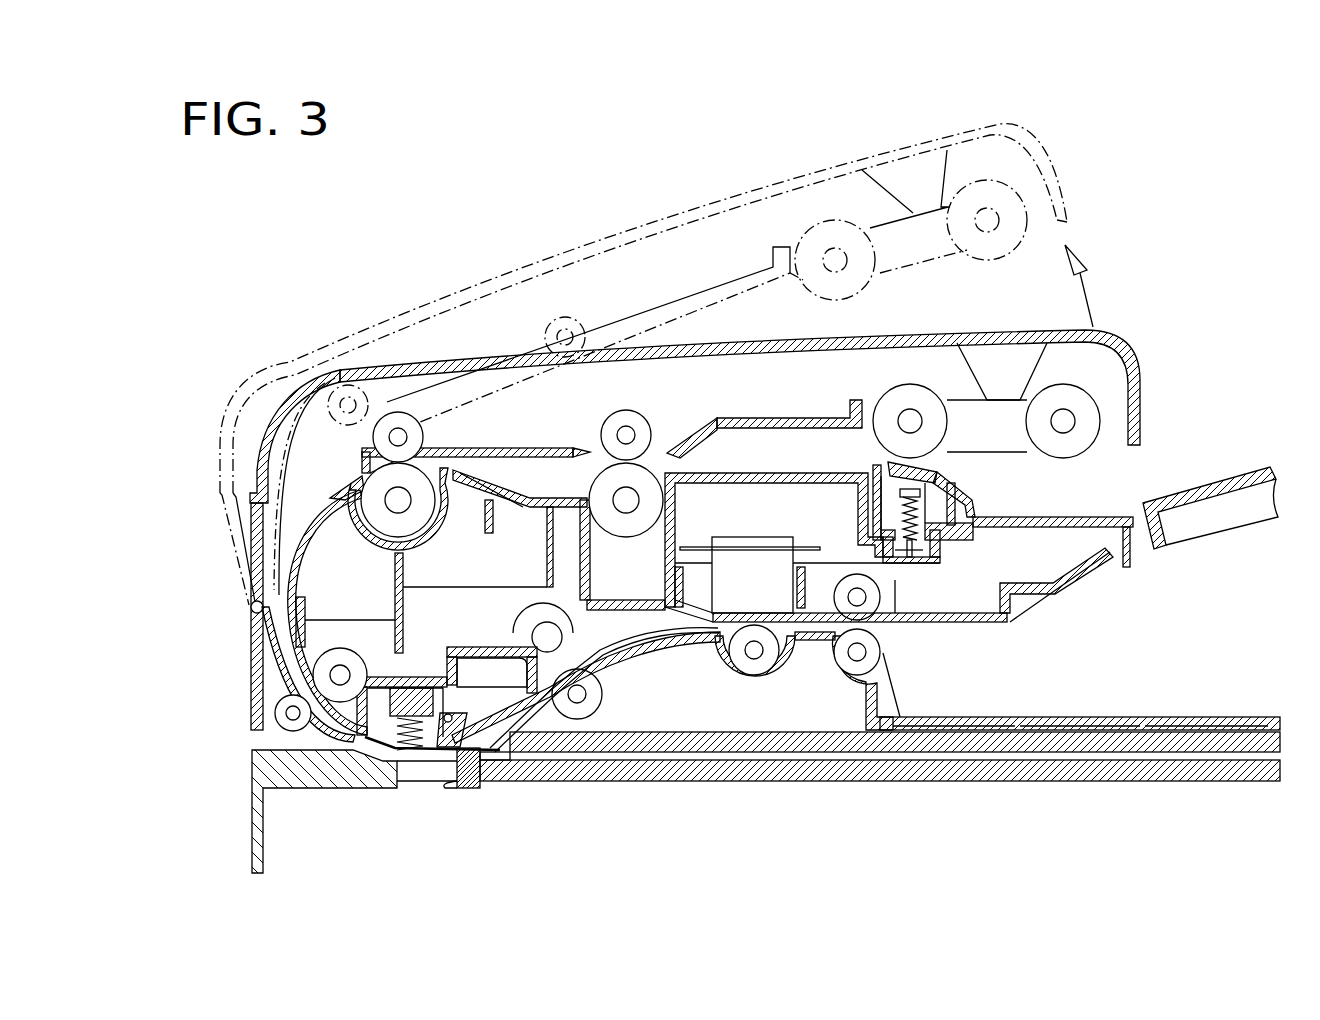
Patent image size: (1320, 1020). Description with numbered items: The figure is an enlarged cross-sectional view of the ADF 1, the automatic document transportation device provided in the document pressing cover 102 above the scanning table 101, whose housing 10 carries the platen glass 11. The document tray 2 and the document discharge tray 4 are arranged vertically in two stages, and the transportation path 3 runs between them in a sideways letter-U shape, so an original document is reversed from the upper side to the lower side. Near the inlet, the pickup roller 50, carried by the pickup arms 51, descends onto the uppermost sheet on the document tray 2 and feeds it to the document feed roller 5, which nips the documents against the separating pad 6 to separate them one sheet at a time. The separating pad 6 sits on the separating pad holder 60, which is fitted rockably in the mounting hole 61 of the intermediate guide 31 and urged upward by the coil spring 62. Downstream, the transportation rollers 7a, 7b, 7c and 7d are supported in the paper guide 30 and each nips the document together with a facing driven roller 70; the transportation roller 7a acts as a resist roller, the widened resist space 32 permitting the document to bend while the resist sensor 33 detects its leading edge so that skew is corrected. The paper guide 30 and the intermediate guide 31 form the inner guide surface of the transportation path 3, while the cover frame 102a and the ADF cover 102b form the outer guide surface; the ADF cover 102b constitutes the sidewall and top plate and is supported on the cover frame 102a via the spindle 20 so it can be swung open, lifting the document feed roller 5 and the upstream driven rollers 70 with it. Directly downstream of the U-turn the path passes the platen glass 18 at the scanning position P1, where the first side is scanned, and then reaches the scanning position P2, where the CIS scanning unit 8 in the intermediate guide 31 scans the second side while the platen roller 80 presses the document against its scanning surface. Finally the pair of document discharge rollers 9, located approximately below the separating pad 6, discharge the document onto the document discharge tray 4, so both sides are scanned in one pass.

The ADF 1 is at (1178, 432).
The document tray 2 is at (1240, 470).
The transportation path 3 is at (836, 493).
The document discharge tray 4 is at (1205, 716).
The document feed roller 5 is at (896, 393).
The separating pad 6 is at (975, 428).
The transportation roller 7a is at (606, 433).
The transportation roller 7b is at (410, 447).
The transportation roller 7c is at (337, 648).
The transportation roller 7d is at (512, 633).
The CIS scanning unit 8 is at (762, 548).
The document discharge rollers 9 is at (876, 664).
The housing 10 is at (305, 790).
The platen glass 11 is at (600, 783).
The platen glass 18 is at (462, 790).
The spindle 20 is at (250, 607).
The paper guide 30 is at (320, 492).
The intermediate guide 31 is at (1063, 517).
The resist space 32 is at (757, 464).
The resist sensor 33 is at (672, 430).
The pickup roller 50 is at (1063, 393).
The pickup arms 51 is at (966, 398).
The separating pad holder 60 is at (878, 467).
The mounting hole 61 is at (978, 530).
The coil spring 62 is at (910, 502).
The driven rollers 70 is at (636, 412).
The platen roller 80 is at (778, 687).
The scanning table 101 is at (706, 793).
The document pressing cover 102 is at (650, 427).
The cover frame 102a is at (251, 690).
The ADF cover 102b is at (1105, 331).
The scanning position P1 is at (413, 790).
The scanning position P2 is at (712, 657).